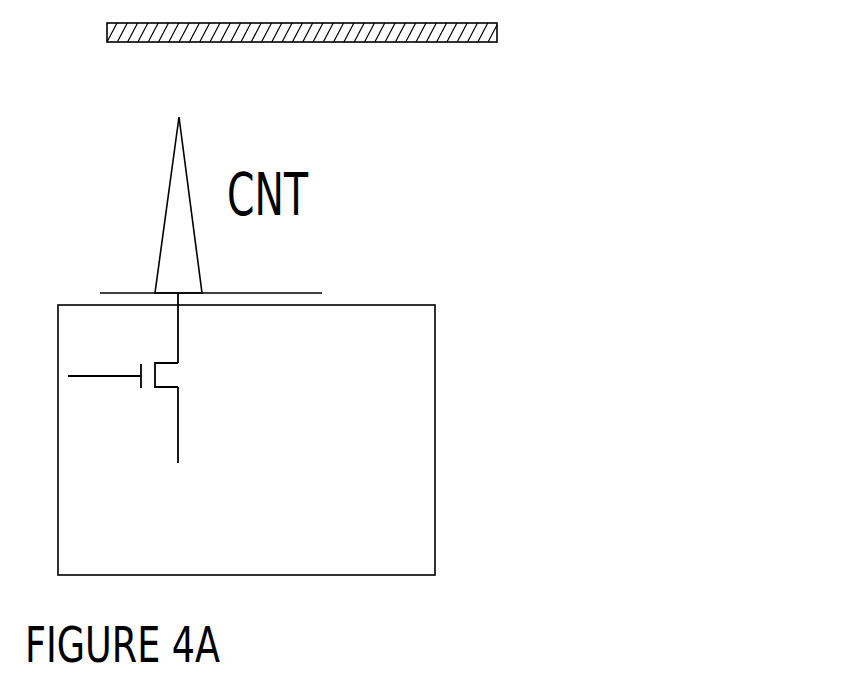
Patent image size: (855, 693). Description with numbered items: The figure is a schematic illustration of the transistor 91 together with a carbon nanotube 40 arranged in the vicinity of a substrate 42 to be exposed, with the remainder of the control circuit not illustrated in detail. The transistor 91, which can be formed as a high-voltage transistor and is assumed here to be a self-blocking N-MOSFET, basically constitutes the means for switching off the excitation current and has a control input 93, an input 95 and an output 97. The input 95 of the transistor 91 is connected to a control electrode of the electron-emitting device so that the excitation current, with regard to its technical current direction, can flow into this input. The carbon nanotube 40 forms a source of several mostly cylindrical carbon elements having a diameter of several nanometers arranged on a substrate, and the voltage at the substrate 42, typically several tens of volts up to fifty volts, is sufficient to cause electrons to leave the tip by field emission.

The substrate 42 is at (497, 27).
The CNT 40 is at (171, 177).
The input 95 is at (180, 341).
The transistor 91 is at (176, 377).
The control input 93 is at (89, 378).
The output 97 is at (178, 447).